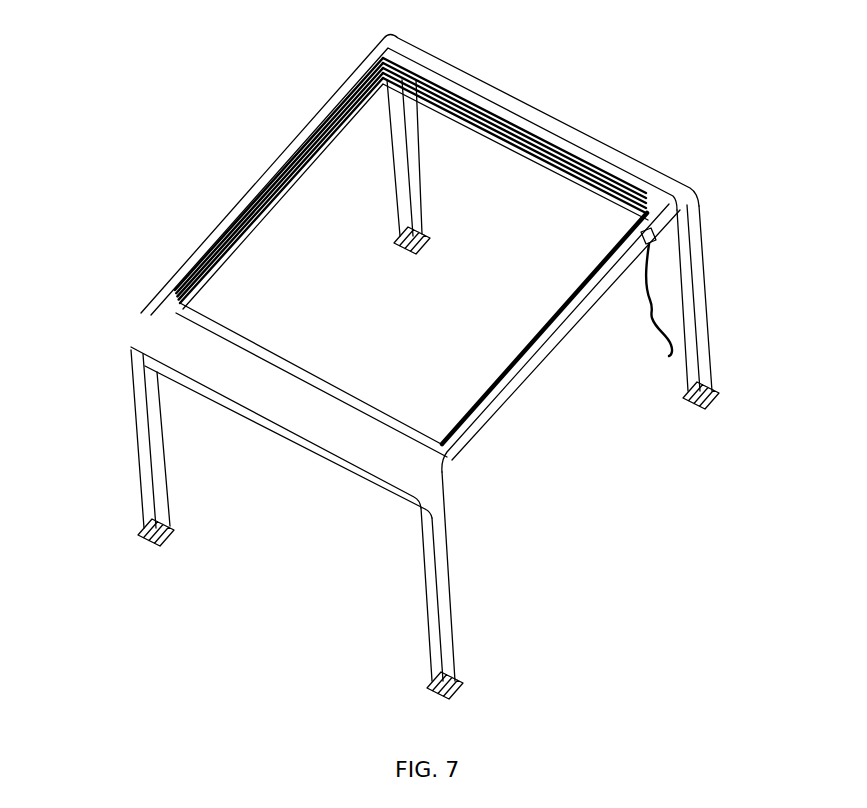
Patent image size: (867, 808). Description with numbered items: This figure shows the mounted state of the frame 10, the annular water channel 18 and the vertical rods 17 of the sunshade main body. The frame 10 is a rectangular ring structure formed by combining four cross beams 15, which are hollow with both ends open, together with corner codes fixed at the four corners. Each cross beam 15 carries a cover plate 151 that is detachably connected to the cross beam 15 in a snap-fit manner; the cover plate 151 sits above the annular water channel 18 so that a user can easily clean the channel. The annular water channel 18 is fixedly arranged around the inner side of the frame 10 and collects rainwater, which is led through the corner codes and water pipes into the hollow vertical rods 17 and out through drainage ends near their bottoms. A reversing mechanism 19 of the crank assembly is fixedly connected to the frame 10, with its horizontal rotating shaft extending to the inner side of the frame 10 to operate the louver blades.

The frame 10 is at (340, 83).
The cross beam 15 is at (219, 222).
The cover plate 151 is at (267, 178).
The vertical rod 17 is at (420, 225).
The annular water channel 18 is at (303, 130).
The reversing mechanism 19 is at (655, 222).